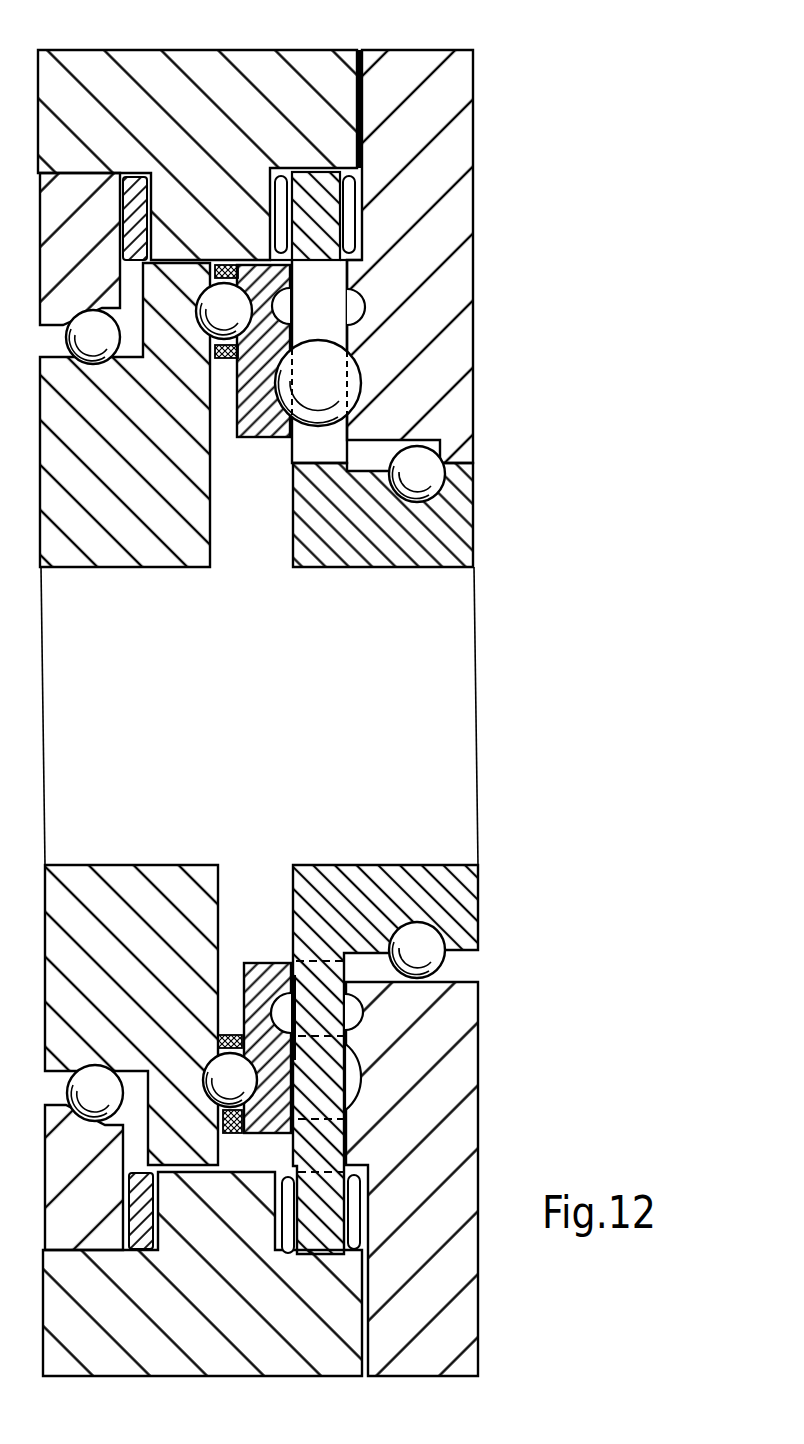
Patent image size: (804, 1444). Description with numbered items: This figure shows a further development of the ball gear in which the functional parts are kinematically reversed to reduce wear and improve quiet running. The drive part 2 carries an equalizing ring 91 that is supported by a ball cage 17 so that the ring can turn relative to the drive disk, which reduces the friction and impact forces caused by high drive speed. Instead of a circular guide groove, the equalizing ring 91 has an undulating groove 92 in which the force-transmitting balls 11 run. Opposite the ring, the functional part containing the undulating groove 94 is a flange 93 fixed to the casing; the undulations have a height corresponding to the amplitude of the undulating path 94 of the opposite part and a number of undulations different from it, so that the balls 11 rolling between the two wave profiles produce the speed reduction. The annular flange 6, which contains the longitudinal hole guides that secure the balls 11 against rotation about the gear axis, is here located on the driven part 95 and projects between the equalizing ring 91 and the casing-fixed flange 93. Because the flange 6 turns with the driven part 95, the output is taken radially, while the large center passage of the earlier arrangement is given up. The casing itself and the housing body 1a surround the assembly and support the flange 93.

The housing body 1a is at (193, 66).
The drive disk 2 is at (146, 547).
The flange 6 is at (333, 447).
The balls 11 is at (325, 372).
The ball cage 17 is at (206, 346).
The equalizing ring 91 is at (256, 436).
The undulating groove 92 is at (238, 262).
The flange 93 is at (449, 136).
The undulating path 94 is at (350, 292).
The driven part 95 is at (457, 518).